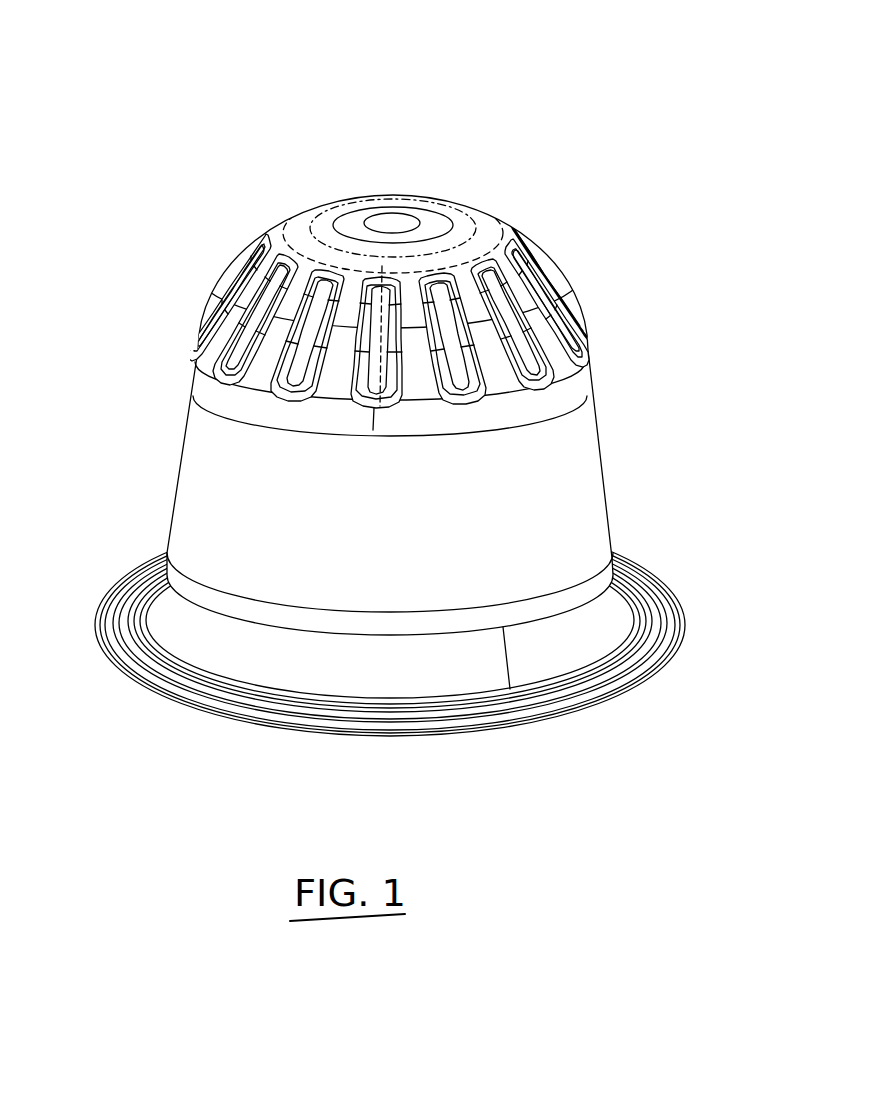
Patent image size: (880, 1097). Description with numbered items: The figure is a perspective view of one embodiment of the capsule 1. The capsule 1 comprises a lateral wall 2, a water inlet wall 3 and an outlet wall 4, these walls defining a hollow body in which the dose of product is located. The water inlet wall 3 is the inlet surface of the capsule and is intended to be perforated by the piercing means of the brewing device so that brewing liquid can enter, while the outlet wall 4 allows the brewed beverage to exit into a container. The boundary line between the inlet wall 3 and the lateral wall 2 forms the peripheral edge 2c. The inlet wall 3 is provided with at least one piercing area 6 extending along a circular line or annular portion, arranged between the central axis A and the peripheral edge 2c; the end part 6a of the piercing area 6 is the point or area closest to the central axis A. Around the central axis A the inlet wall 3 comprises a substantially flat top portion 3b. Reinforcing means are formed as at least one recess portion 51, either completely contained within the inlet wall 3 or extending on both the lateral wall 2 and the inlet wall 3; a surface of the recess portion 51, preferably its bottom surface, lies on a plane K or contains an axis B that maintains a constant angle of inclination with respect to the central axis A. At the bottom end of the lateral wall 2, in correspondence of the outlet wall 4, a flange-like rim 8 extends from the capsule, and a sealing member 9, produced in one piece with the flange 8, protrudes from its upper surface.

The capsule 1 is at (131, 148).
The lateral wall 2 is at (580, 457).
The peripheral edge 2c is at (226, 296).
The water inlet wall 3 is at (492, 228).
The flat top portion 3b is at (354, 212).
The outlet wall 4 is at (539, 731).
The recess portion 51 is at (570, 296).
The piercing area 6 is at (461, 200).
The end part of the piercing area 6a is at (437, 203).
The flange-like rim 8 is at (660, 655).
The sealing member 9 is at (648, 624).
The central axis A is at (390, 226).
The axis B is at (370, 420).
The plane K is at (468, 410).